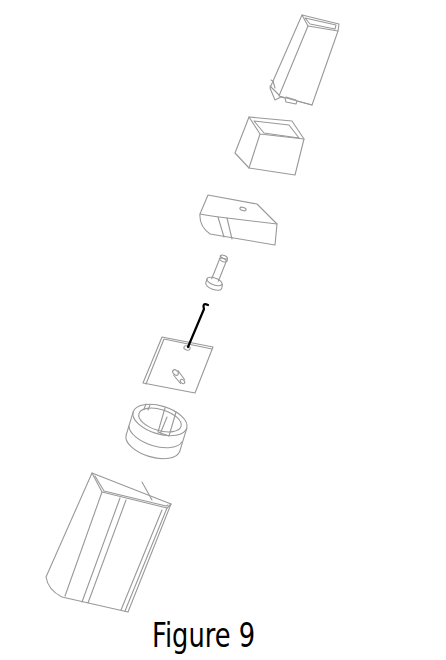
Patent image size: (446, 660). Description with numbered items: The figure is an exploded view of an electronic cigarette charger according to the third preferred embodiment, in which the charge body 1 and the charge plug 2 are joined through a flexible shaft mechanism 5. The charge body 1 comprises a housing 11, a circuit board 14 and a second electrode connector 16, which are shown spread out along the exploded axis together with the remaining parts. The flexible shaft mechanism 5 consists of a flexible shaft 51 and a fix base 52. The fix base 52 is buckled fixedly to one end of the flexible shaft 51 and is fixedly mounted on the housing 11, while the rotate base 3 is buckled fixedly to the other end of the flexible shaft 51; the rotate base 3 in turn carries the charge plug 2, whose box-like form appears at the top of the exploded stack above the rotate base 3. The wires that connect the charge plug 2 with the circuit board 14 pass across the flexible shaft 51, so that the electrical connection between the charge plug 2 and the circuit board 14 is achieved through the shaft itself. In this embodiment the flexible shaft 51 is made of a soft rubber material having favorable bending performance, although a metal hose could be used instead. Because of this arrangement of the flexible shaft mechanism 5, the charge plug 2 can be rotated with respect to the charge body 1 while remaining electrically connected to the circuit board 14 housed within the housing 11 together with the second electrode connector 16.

The charge body 1 is at (80, 385).
The charge plug 2 is at (320, 71).
The rotate base 3 is at (288, 158).
The flexible shaft mechanism 5 is at (343, 217).
The flexible shaft 51 is at (228, 273).
The fix base 52 is at (267, 233).
The housing 11 is at (142, 553).
The circuit board 14 is at (200, 365).
The second electrode connector 16 is at (180, 437).